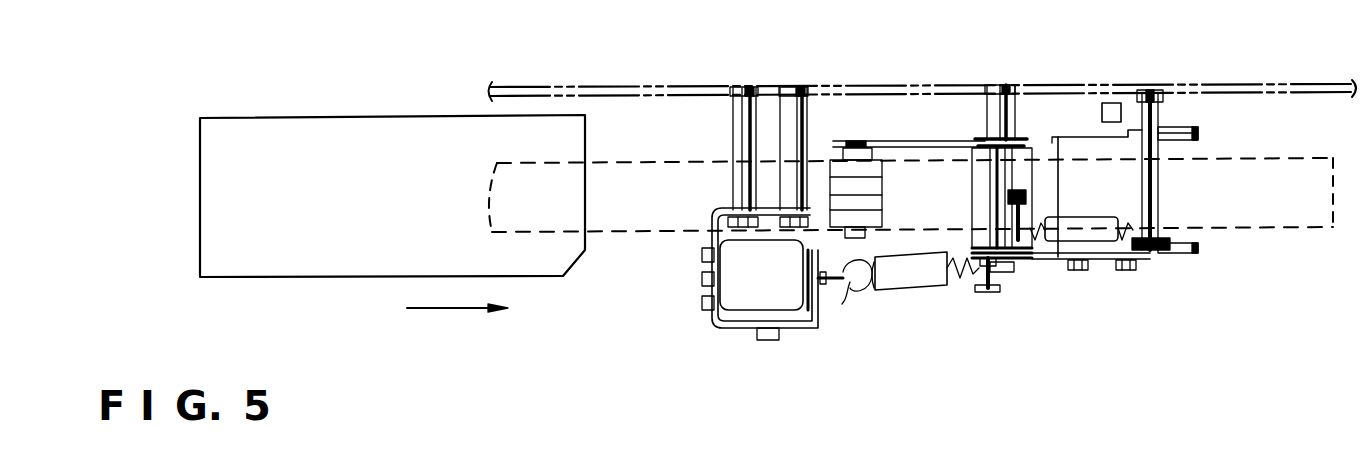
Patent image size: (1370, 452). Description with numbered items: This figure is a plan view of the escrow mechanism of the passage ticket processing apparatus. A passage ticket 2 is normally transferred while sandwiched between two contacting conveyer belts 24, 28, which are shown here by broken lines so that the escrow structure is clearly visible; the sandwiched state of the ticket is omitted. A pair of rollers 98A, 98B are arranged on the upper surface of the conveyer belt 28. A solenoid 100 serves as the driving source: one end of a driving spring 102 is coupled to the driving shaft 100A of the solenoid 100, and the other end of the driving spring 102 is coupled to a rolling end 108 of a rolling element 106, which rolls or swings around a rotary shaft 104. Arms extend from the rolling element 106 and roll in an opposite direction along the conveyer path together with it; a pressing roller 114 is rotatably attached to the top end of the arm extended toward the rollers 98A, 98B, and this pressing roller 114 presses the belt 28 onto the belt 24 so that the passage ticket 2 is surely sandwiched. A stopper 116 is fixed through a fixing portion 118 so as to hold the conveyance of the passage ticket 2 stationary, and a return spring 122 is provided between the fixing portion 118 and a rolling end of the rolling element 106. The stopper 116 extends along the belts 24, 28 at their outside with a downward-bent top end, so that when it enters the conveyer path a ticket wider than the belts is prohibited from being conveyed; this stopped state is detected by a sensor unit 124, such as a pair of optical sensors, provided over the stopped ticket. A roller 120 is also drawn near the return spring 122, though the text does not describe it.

The passage ticket 2 is at (305, 118).
The conveyer belt 24 is at (915, 223).
The conveyer belt 28 is at (1293, 225).
The roller 98A is at (748, 105).
The roller 98B is at (797, 105).
The solenoid 100 is at (742, 305).
The driving shaft 100A is at (832, 285).
The driving spring 102 is at (903, 272).
The rotary shaft 104 is at (1005, 275).
The rolling element 106 is at (914, 130).
The rolling end 108 is at (975, 290).
The pressing roller 114 is at (848, 158).
The stopper 116 is at (1198, 133).
The fixing portion 118 is at (1113, 243).
The roller 120 is at (1027, 208).
The return spring 122 is at (1068, 148).
The sensor unit 124 is at (1108, 103).